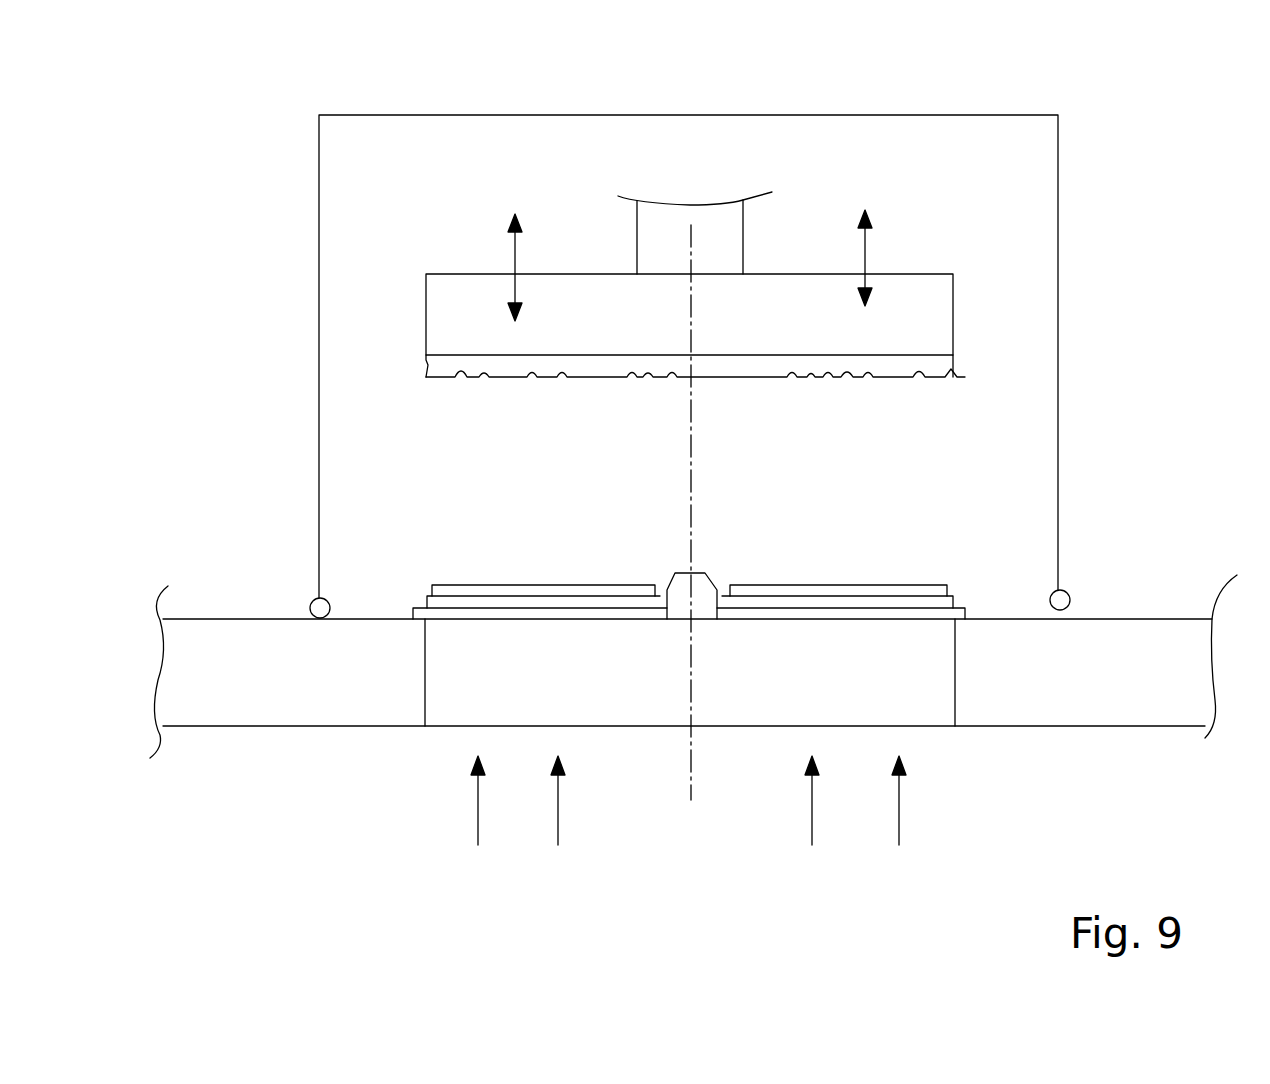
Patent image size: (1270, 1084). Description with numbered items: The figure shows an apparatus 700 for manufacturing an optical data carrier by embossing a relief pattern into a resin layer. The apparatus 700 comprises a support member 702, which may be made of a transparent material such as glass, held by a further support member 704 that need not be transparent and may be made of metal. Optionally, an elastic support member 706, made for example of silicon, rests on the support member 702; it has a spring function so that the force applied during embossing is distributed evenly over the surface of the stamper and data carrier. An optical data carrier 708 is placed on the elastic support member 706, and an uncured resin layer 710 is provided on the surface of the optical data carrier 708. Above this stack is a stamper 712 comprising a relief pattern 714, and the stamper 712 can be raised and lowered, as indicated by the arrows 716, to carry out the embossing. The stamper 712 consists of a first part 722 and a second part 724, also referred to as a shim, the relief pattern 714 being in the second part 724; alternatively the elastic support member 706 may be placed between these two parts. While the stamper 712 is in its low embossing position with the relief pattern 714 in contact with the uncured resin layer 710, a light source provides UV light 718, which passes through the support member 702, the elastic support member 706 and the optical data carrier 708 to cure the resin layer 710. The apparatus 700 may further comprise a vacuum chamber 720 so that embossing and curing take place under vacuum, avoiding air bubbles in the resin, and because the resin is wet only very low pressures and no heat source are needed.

The apparatus 700 is at (1138, 129).
The support member 702 is at (930, 702).
The further support member 704 is at (1122, 695).
The elastic support member 706 is at (780, 612).
The optical data carrier 708 is at (898, 598).
The uncured resin layer 710 is at (898, 582).
The stamper 712 is at (788, 319).
The relief pattern 714 is at (557, 393).
The arrows 716 is at (865, 245).
The UV light 718 is at (478, 803).
The vacuum chamber 720 is at (1060, 462).
The first part 722 is at (920, 293).
The second part 724 is at (940, 360).